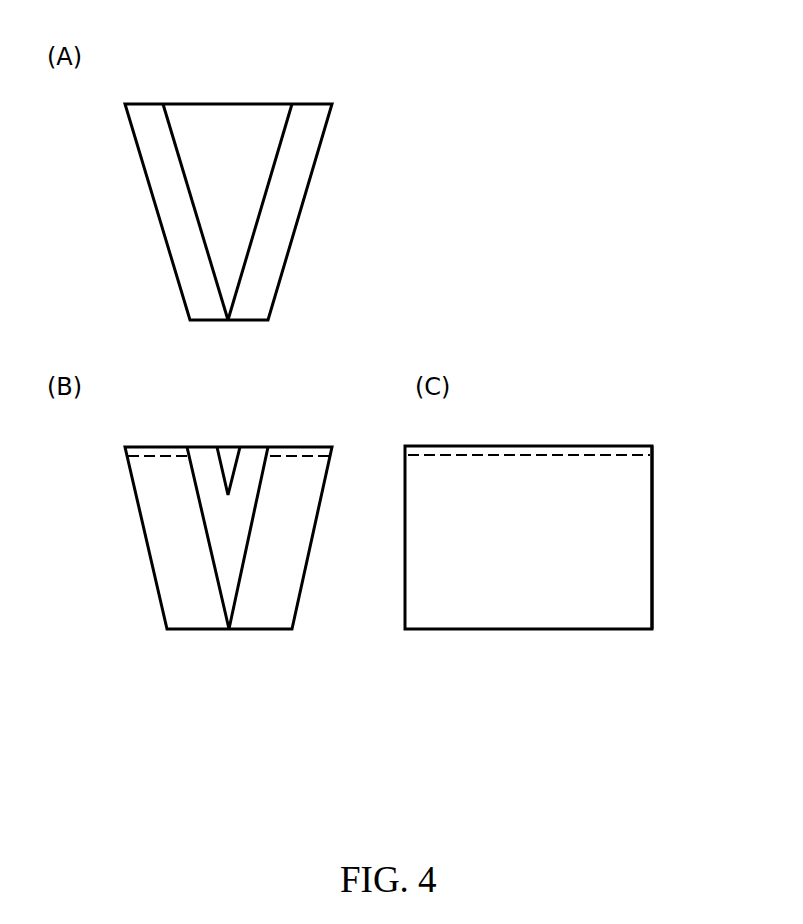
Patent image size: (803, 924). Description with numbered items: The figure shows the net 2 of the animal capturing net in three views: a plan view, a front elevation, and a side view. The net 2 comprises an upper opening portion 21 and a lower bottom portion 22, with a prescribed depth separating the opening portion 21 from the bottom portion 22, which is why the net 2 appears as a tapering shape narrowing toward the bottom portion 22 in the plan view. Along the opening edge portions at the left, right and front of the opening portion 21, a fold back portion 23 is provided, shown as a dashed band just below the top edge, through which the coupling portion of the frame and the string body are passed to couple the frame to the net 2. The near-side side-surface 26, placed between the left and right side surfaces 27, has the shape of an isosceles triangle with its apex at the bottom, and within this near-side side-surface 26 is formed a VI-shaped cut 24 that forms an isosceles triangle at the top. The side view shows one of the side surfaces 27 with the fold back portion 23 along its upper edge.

The net 2 is at (165, 67).
The opening portion 21 is at (303, 199).
The bottom portion 22 is at (243, 120).
The fold back portion 23 is at (300, 450).
The VI-shaped cut 24 is at (222, 447).
The near-side side-surface 26 is at (227, 572).
The side surface 27 is at (630, 537).